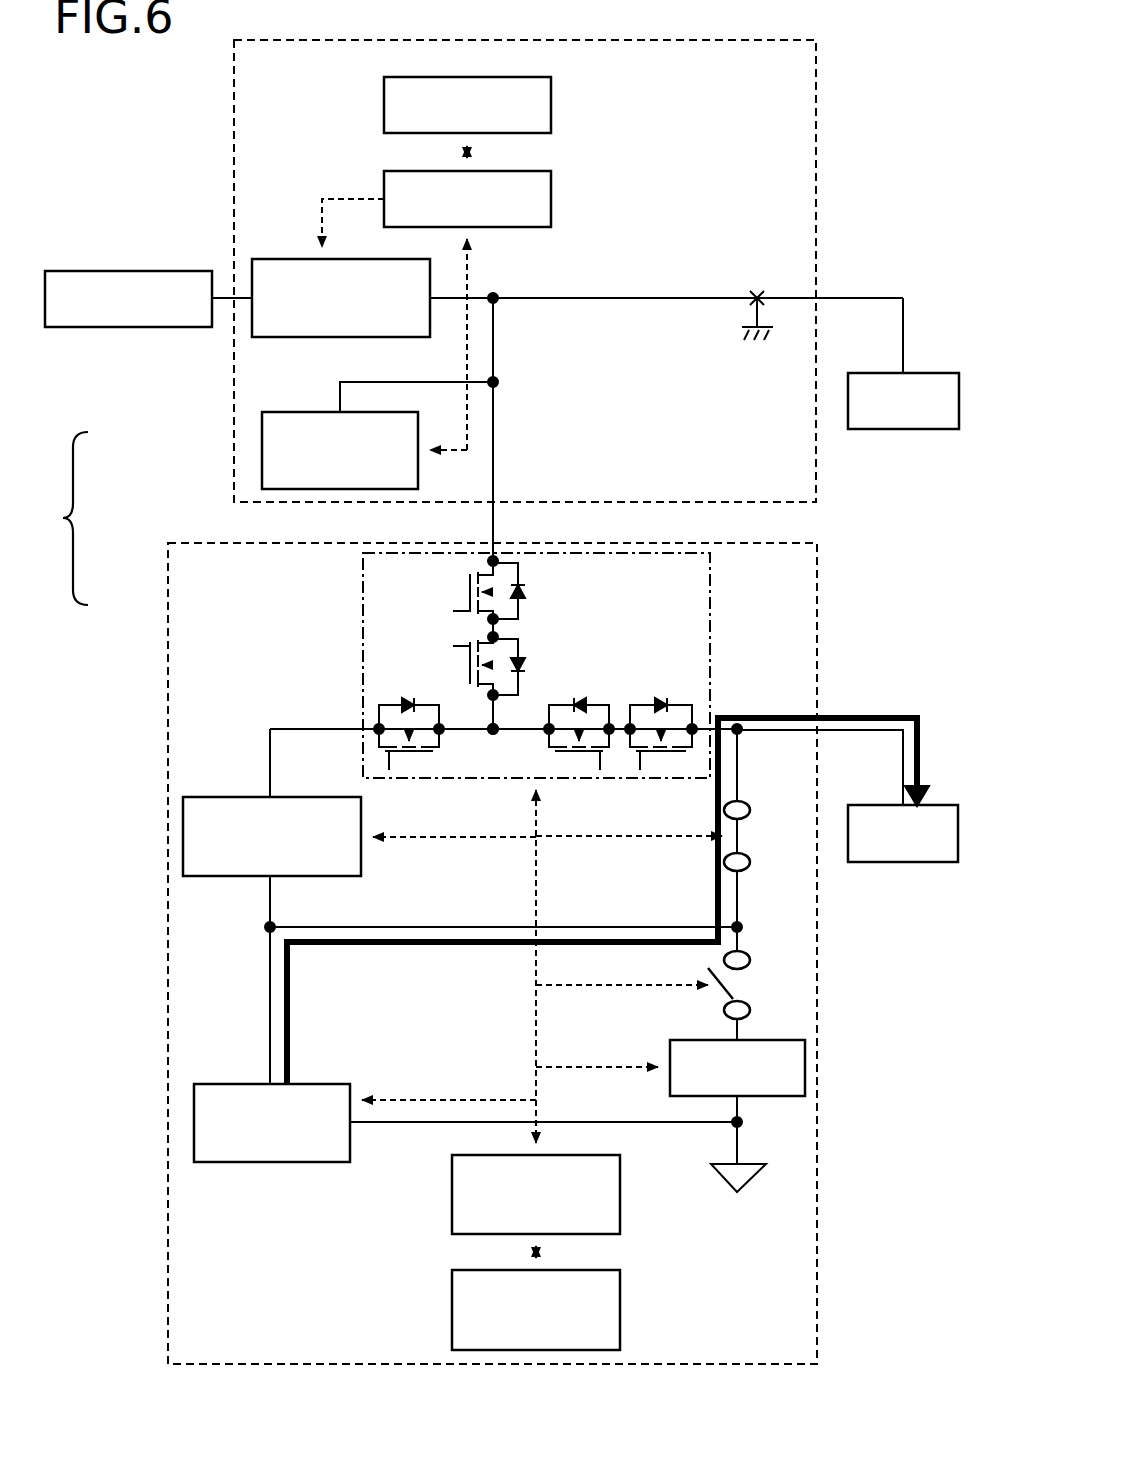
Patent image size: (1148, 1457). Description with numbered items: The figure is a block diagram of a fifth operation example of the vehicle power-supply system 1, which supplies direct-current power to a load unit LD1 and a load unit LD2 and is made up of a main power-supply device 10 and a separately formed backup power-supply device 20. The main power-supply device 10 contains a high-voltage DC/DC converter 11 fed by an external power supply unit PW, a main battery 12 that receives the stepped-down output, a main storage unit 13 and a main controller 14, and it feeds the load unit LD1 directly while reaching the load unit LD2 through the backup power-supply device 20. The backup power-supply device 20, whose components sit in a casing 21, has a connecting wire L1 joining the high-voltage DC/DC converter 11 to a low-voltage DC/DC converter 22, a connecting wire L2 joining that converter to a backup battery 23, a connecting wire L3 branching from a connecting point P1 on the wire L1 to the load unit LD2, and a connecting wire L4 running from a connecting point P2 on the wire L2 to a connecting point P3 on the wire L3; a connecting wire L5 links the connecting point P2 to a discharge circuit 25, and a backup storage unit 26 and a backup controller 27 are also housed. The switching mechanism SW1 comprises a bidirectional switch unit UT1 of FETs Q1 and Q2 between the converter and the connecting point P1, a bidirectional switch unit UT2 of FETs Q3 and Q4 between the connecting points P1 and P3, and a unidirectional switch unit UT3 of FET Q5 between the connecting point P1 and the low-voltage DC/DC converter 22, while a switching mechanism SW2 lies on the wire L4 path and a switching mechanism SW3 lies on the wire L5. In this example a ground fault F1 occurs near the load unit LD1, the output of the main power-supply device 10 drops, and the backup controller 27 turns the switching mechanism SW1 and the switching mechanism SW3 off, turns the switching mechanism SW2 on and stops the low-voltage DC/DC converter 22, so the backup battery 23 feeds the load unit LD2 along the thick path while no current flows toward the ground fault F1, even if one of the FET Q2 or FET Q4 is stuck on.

The vehicle power-supply system 1 is at (66, 518).
The main power-supply device 10 is at (234, 445).
The high-voltage DC/DC converter 11 is at (372, 260).
The main battery 12 is at (282, 413).
The main storage unit 13 is at (492, 80).
The main controller 14 is at (492, 174).
The backup power-supply device 20 is at (168, 553).
The casing 21 is at (457, 953).
The low-voltage DC/DC converter 22 is at (211, 798).
The backup battery 23 is at (222, 1085).
The discharge circuit 25 is at (765, 1041).
The backup storage unit 26 is at (555, 1271).
The backup controller 27 is at (555, 1156).
The power supply unit PW is at (150, 272).
The ground fault F1 is at (757, 290).
The load unit LD1 is at (903, 430).
The load unit LD2 is at (903, 863).
The connecting wire L1 is at (493, 516).
The connecting wire L2 is at (271, 990).
The connecting wire L3 is at (727, 728).
The connecting wire L4 is at (737, 748).
The connecting wire L5 is at (736, 945).
The connecting point P1 is at (493, 734).
The connecting point P2 is at (266, 928).
The connecting point P3 is at (739, 727).
The FET Q1 is at (473, 592).
The FET Q2 is at (473, 665).
The FET Q3 is at (580, 770).
The FET Q4 is at (665, 770).
The FET Q5 is at (407, 770).
The bidirectional switch unit UT1 is at (310, 582).
The bidirectional switch unit UT2 is at (557, 870).
The unidirectional switch unit UT3 is at (409, 734).
The switching mechanism SW1 is at (710, 565).
The switching mechanism SW2 is at (752, 832).
The switching mechanism SW3 is at (752, 978).